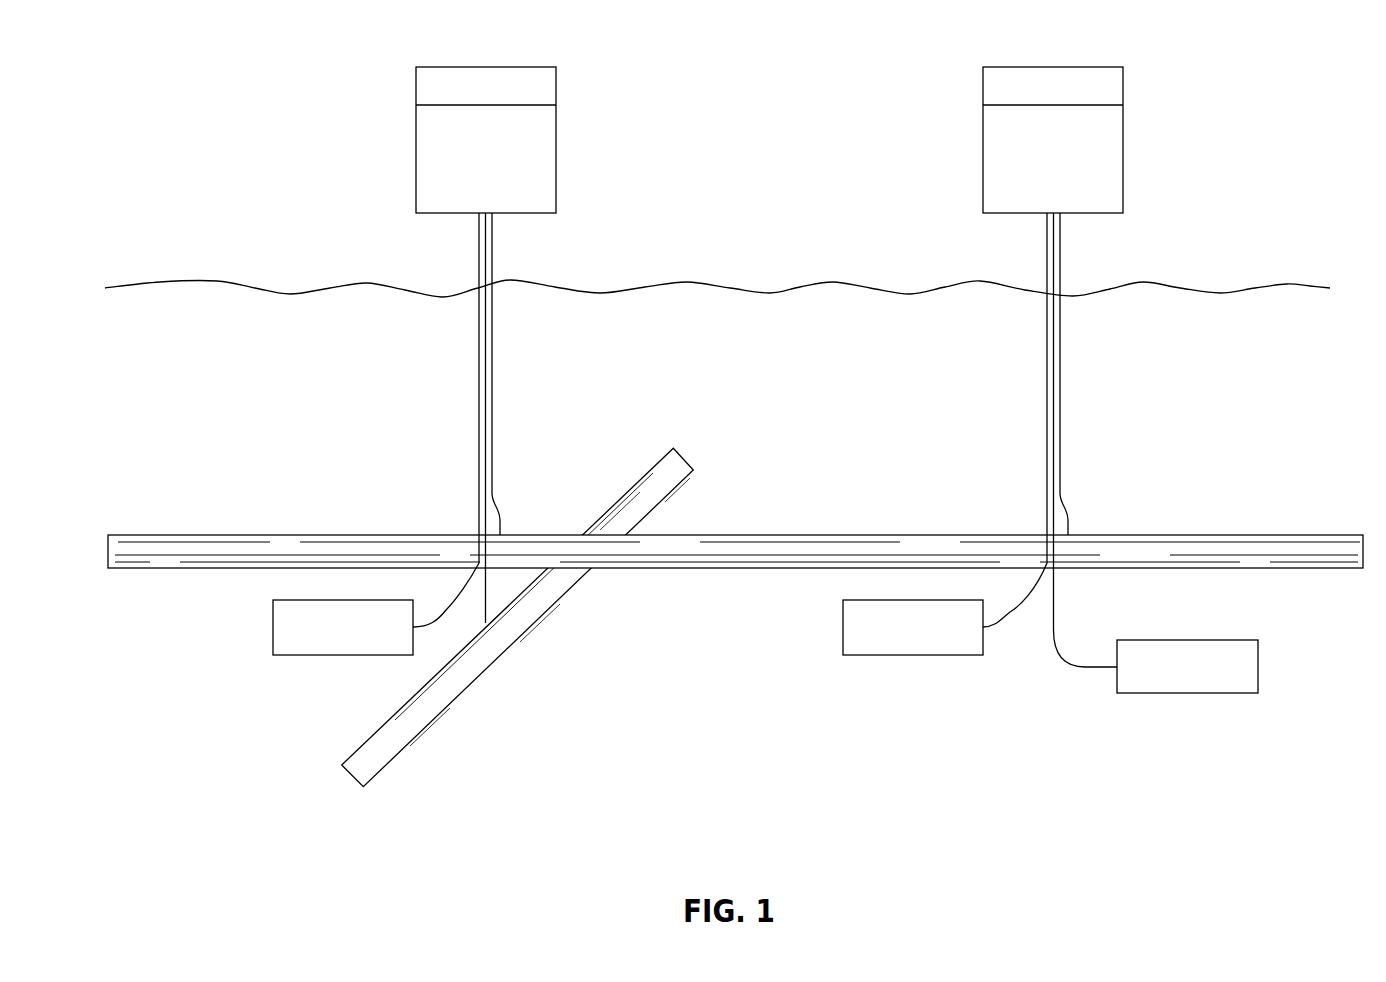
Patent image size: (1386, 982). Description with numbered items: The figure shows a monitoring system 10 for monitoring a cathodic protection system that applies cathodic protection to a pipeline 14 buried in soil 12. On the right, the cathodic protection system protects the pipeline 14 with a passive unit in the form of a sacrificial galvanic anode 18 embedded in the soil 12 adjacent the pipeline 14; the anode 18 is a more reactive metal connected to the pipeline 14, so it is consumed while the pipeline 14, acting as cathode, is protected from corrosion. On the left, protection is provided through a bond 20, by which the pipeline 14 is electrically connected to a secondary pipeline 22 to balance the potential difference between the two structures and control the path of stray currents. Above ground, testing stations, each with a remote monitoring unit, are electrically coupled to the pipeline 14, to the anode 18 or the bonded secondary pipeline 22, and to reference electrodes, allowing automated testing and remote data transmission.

The monitoring system 10 is at (724, 50).
The soil 12 is at (775, 293).
The pipeline 14 is at (1197, 535).
The sacrificial galvanic anode 18 is at (1247, 640).
The bond 20 is at (596, 432).
The secondary pipeline 22 is at (661, 460).